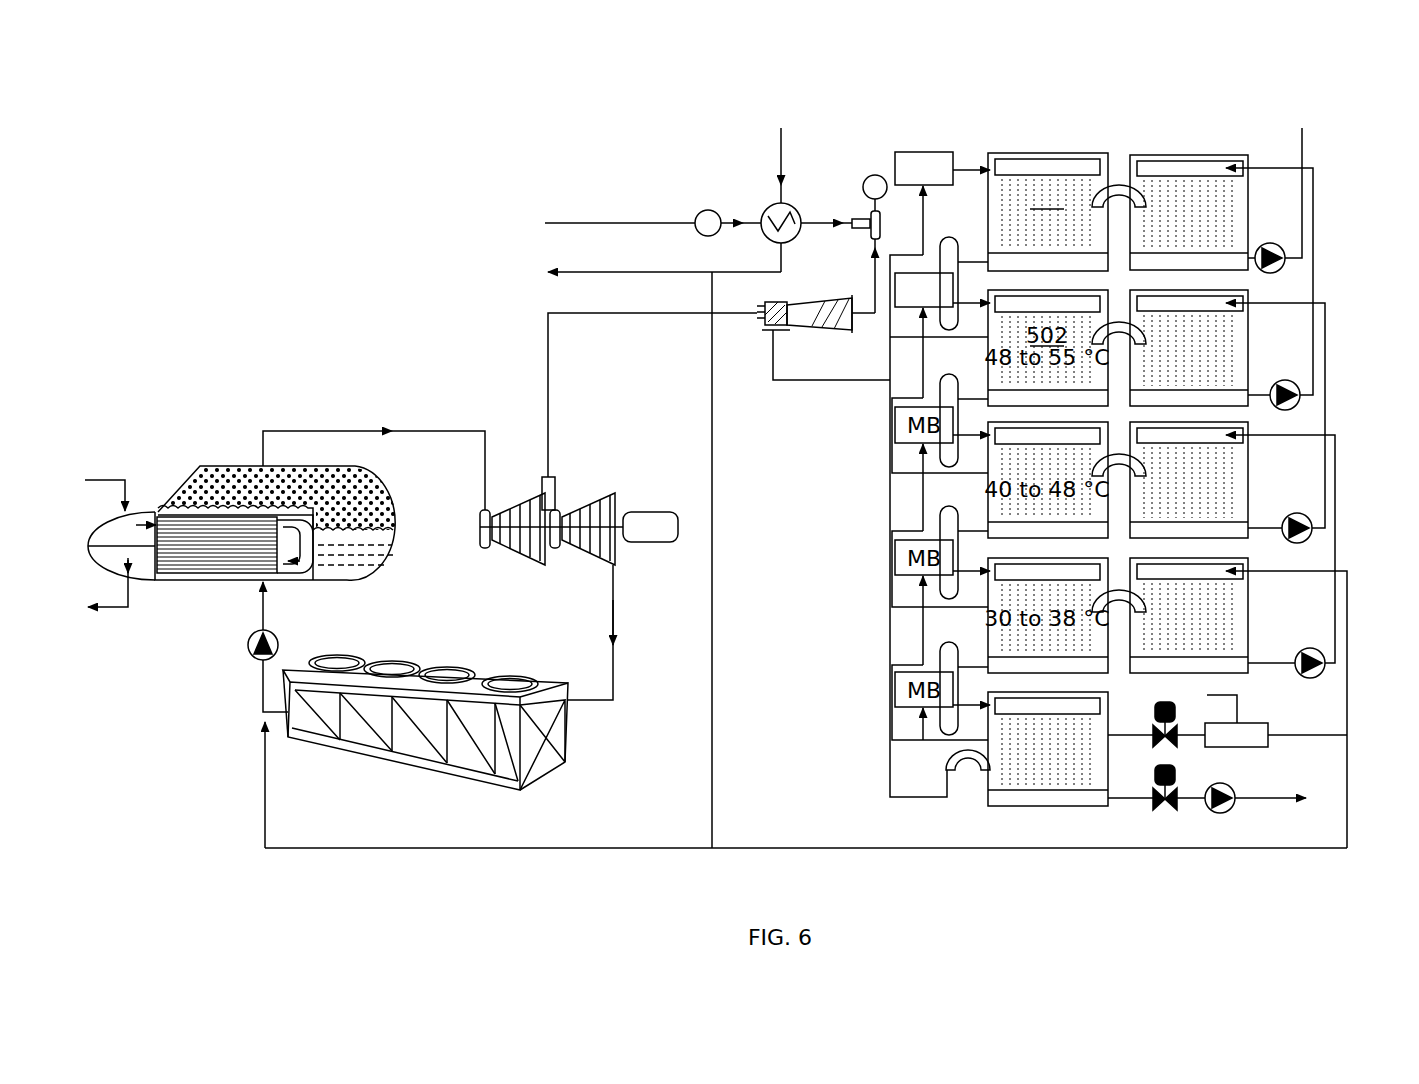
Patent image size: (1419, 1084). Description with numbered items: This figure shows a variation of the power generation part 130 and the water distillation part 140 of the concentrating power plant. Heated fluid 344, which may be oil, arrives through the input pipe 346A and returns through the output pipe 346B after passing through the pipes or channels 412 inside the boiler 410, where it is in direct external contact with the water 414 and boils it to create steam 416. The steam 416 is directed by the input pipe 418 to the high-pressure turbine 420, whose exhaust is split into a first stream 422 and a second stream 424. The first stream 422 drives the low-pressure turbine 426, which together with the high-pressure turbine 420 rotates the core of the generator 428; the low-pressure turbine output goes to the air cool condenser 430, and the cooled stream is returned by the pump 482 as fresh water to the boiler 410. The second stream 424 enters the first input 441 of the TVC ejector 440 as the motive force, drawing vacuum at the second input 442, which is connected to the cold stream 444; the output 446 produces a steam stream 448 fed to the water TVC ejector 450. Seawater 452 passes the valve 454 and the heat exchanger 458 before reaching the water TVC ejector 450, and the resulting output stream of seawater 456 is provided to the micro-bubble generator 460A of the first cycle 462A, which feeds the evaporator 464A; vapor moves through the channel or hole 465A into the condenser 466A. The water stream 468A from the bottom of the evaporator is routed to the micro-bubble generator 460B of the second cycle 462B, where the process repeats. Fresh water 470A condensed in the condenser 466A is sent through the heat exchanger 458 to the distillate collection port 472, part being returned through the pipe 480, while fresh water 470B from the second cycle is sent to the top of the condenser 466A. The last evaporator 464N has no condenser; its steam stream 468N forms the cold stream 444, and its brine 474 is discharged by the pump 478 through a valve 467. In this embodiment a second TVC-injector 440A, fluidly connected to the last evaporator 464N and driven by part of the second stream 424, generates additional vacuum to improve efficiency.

The water distillation part 140 is at (460, 135).
The power generation part 130 is at (631, 472).
The boiler 410 is at (197, 468).
The pipes or channels 412 is at (200, 565).
The water 414 is at (349, 570).
The steam 416 is at (318, 480).
The fluid 344 is at (133, 522).
The input pipe 346A is at (108, 480).
The output pipe 346B is at (113, 610).
The input pipe 418 is at (422, 430).
The high-pressure turbine 420 is at (502, 545).
The first stream 422 is at (563, 490).
The second stream 424 is at (546, 365).
The low-pressure turbine 426 is at (573, 545).
The generator 428 is at (649, 545).
The air cool condenser 430 is at (428, 765).
The thermal vapor compressor ejector 440 is at (796, 303).
The first input 441 is at (770, 320).
The second input 442 is at (773, 352).
The cold stream 444 is at (888, 566).
The output 446 is at (821, 323).
The steam stream 448 is at (868, 250).
The water TVC ejector 450 is at (879, 208).
The seawater 452 is at (562, 223).
The valve 454 is at (708, 210).
The output stream of seawater 456 is at (863, 168).
The heat exchanger 458 is at (777, 203).
The micro-bubble generator 460A is at (925, 152).
The micro-bubble generator 460B is at (900, 332).
The first cycle 462A is at (1283, 190).
The second cycle 462B is at (1292, 330).
The evaporator 464A is at (1019, 147).
The last evaporator 464N is at (1117, 783).
The channel or hole 465A is at (1120, 184).
The condenser 466A is at (1203, 146).
The control valve 467 is at (1177, 778).
The water stream 468A is at (980, 258).
The steam stream 468N is at (933, 800).
The fresh water 470A is at (1303, 218).
The fresh water 470B is at (1326, 372).
The distillate collection port 472 is at (583, 270).
The brine 474 is at (1283, 802).
The pump 478 is at (1223, 814).
The pipe 480 is at (714, 657).
The pump 482 is at (248, 652).
The second TVC-injector 440A is at (1270, 735).